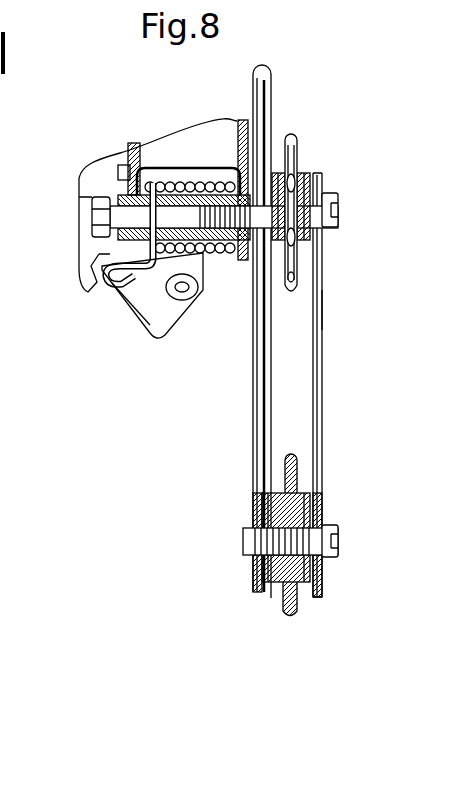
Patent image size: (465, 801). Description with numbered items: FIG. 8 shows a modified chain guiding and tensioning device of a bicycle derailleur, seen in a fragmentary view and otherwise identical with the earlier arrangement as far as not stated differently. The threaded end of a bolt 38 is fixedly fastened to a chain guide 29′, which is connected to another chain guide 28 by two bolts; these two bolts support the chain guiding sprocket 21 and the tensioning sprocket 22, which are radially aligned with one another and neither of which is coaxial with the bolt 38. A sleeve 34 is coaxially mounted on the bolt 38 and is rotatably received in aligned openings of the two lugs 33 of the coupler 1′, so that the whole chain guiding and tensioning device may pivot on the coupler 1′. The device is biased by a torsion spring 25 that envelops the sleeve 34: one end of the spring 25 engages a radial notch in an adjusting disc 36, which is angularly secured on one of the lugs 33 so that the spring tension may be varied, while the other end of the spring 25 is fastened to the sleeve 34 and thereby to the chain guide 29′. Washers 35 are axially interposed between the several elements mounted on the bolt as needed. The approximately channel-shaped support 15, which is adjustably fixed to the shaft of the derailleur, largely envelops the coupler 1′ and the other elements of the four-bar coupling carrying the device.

The coupler 1′ is at (200, 130).
The support 15 is at (74, 272).
The chain guiding sprocket 21 is at (297, 150).
The tensioning sprocket 22 is at (300, 472).
The torsion spring 25 is at (212, 253).
The chain guide 28 is at (318, 392).
The chain guide 29′ is at (258, 372).
The lugs 33 is at (131, 150).
The sleeve 34 is at (175, 188).
The washers 35 is at (110, 190).
The adjusting disc 36 is at (116, 244).
The bolt 38 is at (103, 210).